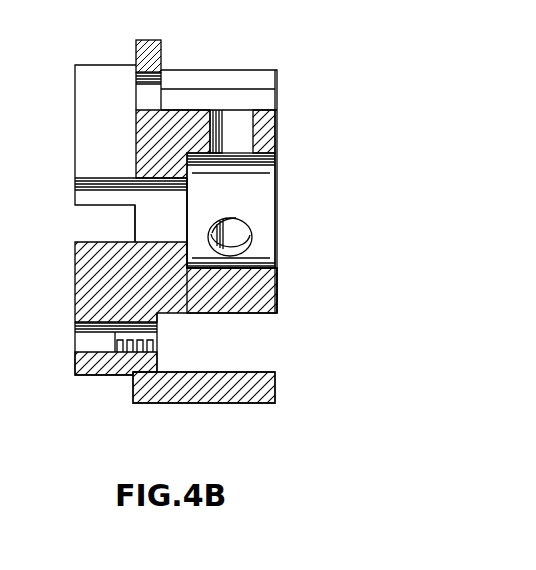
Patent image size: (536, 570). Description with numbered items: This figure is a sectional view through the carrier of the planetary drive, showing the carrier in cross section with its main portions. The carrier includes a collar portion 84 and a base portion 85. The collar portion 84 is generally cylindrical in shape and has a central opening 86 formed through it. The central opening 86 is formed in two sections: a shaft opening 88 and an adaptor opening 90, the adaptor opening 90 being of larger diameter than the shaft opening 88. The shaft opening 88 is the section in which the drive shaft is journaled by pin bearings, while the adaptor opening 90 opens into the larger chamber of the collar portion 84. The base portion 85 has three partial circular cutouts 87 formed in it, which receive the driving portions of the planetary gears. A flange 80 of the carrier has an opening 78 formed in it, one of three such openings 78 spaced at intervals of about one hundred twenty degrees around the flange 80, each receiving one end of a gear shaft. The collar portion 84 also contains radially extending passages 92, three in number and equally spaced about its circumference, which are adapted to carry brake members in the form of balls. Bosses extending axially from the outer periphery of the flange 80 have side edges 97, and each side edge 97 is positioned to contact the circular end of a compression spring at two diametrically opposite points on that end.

The opening 78 is at (138, 82).
The flange 80 is at (158, 42).
The collar portion 84 is at (265, 298).
The base portion 85 is at (78, 271).
The central opening 86 is at (251, 197).
The partial circular cutout 87 is at (117, 138).
The shaft opening 88 is at (170, 218).
The adaptor opening 90 is at (242, 202).
The radially extending passage 92 is at (250, 134).
The side edge 97 is at (240, 97).